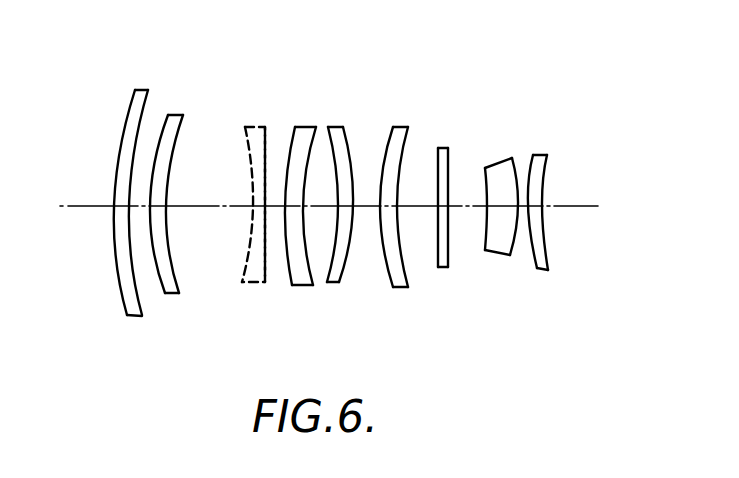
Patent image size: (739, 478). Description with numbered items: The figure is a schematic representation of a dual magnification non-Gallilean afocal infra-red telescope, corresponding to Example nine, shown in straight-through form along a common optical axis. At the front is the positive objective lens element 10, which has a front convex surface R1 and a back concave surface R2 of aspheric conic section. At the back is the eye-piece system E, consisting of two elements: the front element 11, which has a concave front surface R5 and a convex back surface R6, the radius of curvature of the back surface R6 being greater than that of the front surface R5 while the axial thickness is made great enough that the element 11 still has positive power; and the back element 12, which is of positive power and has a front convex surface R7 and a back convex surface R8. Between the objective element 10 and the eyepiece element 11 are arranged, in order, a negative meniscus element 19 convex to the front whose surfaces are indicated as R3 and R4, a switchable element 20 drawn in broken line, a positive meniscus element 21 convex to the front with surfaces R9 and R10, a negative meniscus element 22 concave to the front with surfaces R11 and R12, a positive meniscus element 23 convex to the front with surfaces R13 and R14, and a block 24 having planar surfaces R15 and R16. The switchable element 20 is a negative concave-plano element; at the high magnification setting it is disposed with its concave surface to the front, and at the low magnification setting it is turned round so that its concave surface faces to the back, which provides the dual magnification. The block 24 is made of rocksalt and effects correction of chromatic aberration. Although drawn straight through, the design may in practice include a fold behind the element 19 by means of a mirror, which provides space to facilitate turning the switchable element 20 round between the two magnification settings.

The front positive objective lens element 10 is at (132, 303).
The negative meniscus element 19 is at (172, 295).
The switchable element 20 is at (248, 285).
The positive meniscus element 21 is at (301, 287).
The negative meniscus element 22 is at (330, 284).
The positive meniscus element 23 is at (400, 288).
The block 24 is at (443, 268).
The front element of eyepiece system 11 is at (497, 252).
The back element of eyepiece system 12 is at (541, 270).
The eye-piece system E is at (567, 93).
The front convex surface R1 is at (129, 113).
The back concave surface R2 is at (148, 96).
The surface of element 19 R3 is at (165, 120).
The surface of element 19 R4 is at (186, 121).
The surface of element 21 R9 is at (291, 137).
The surface of element 21 R10 is at (321, 128).
The surface of element 22 R11 is at (334, 158).
The surface of element 22 R12 is at (341, 130).
The surface of element 23 R13 is at (387, 156).
The surface of element 23 R14 is at (412, 128).
The surface of block 24 R15 is at (438, 167).
The surface of block 24 R16 is at (448, 150).
The concave front surface R5 is at (487, 170).
The convex back surface R6 is at (515, 162).
The front convex surface R7 is at (536, 157).
The back convex surface R8 is at (548, 168).